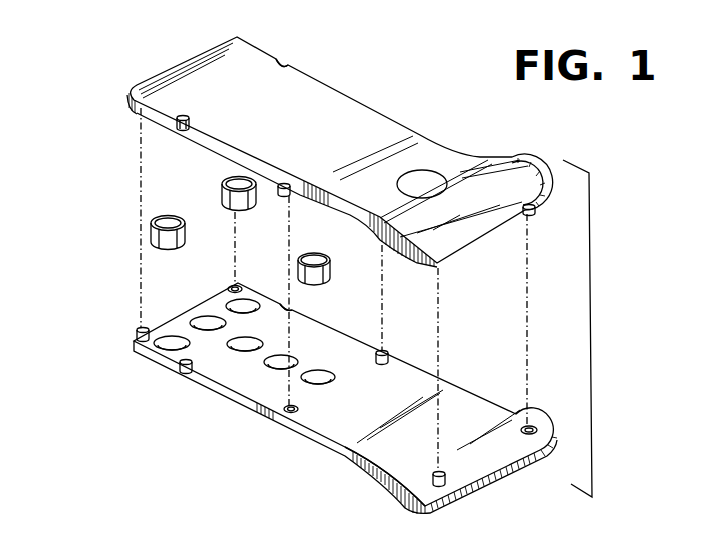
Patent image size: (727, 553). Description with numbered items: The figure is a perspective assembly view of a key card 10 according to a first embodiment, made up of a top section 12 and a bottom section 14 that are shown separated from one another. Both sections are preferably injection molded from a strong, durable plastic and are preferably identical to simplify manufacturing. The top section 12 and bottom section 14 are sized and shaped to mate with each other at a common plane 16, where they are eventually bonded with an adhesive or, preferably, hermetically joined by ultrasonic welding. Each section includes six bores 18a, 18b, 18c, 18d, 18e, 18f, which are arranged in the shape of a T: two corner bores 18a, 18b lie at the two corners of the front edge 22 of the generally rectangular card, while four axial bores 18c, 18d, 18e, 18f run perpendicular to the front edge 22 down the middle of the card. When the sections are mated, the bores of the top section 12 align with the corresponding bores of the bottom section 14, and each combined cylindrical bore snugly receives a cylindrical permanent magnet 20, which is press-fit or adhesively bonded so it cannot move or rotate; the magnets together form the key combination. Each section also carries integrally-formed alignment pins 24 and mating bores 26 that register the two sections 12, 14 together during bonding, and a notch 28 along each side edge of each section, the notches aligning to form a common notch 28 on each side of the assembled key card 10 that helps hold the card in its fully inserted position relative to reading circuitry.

The key card 10 is at (593, 317).
The top section 12 is at (384, 131).
The bottom section 14 is at (467, 410).
The common plane 16 is at (393, 447).
The bore 18a is at (156, 346).
The bore 18b is at (240, 299).
The bore 18c is at (200, 322).
The bore 18d is at (262, 336).
The bore 18e is at (272, 376).
The bore 18f is at (329, 374).
The magnet 20 is at (223, 190).
The front edge 22 is at (165, 70).
The alignment pin 24 is at (282, 194).
The mating bore 26 is at (238, 285).
The notch 28 is at (179, 130).